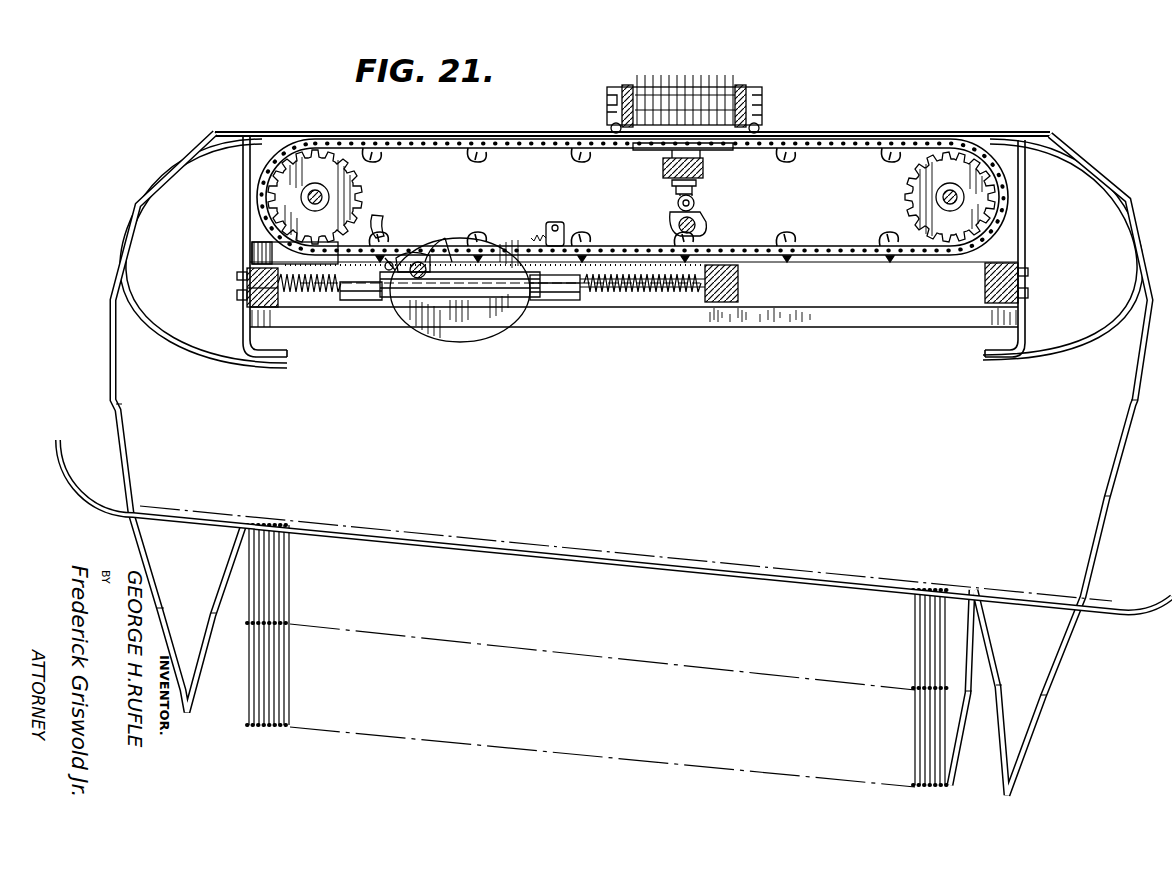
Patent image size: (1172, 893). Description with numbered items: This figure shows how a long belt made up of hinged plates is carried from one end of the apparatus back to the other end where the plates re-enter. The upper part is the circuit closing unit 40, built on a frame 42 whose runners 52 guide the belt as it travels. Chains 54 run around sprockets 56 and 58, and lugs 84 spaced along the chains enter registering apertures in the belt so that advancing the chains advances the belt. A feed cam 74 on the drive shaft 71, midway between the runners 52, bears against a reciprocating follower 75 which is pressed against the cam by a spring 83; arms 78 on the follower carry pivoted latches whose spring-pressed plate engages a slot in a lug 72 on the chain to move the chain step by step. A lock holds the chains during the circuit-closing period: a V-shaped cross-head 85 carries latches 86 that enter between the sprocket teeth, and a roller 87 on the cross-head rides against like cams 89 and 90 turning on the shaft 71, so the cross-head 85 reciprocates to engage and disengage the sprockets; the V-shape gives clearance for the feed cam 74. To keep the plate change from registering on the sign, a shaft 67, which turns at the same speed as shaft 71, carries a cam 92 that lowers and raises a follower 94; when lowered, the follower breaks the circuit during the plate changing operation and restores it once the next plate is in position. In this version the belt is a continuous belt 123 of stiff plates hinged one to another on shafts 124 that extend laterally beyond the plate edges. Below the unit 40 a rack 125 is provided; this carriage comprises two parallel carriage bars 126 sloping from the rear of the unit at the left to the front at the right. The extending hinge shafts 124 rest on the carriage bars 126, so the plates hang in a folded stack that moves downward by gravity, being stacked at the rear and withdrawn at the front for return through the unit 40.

The circuit closing unit 40 is at (735, 85).
The frame 42 is at (263, 305).
The runners 52 is at (797, 318).
The chains 54 is at (510, 145).
The sprocket 56 is at (353, 199).
The sprocket 58 is at (892, 186).
The shaft 67 is at (705, 229).
The drive shaft 71 is at (406, 260).
The lug 72 is at (582, 155).
The feed cam 74 is at (464, 325).
The reciprocating follower 75 is at (563, 297).
The arms 78 is at (555, 233).
The spring 83 is at (668, 297).
The lugs 84 is at (478, 130).
The cross-head 85 is at (364, 300).
The latches 86 is at (376, 225).
The roller 87 is at (390, 262).
The cam 89 is at (430, 258).
The cam 90 is at (308, 300).
The cam 92 is at (700, 210).
The follower 94 is at (696, 188).
The continuous belt 123 is at (1136, 372).
The hinge shaft 124 is at (217, 132).
The rack 125 is at (363, 527).
The carriage bars 126 is at (487, 548).